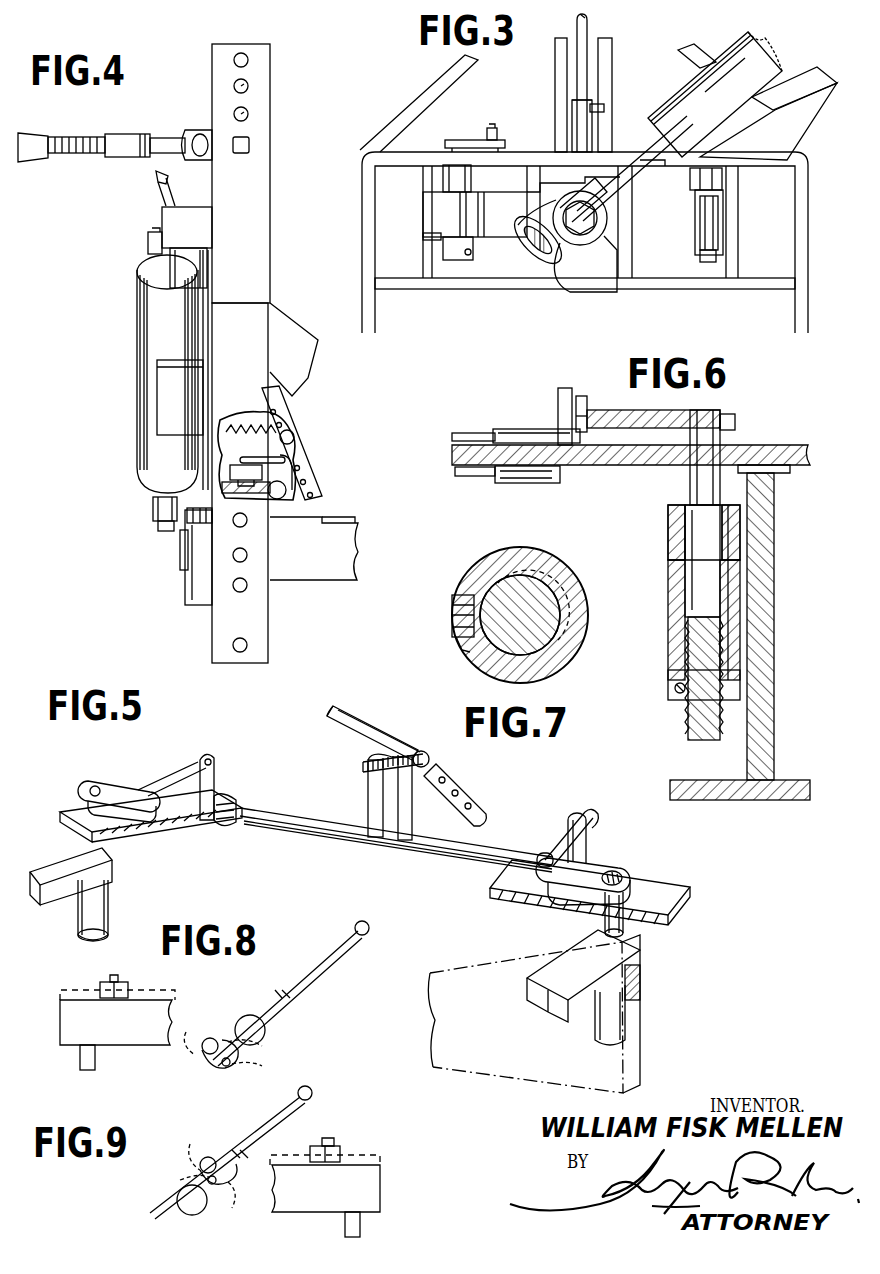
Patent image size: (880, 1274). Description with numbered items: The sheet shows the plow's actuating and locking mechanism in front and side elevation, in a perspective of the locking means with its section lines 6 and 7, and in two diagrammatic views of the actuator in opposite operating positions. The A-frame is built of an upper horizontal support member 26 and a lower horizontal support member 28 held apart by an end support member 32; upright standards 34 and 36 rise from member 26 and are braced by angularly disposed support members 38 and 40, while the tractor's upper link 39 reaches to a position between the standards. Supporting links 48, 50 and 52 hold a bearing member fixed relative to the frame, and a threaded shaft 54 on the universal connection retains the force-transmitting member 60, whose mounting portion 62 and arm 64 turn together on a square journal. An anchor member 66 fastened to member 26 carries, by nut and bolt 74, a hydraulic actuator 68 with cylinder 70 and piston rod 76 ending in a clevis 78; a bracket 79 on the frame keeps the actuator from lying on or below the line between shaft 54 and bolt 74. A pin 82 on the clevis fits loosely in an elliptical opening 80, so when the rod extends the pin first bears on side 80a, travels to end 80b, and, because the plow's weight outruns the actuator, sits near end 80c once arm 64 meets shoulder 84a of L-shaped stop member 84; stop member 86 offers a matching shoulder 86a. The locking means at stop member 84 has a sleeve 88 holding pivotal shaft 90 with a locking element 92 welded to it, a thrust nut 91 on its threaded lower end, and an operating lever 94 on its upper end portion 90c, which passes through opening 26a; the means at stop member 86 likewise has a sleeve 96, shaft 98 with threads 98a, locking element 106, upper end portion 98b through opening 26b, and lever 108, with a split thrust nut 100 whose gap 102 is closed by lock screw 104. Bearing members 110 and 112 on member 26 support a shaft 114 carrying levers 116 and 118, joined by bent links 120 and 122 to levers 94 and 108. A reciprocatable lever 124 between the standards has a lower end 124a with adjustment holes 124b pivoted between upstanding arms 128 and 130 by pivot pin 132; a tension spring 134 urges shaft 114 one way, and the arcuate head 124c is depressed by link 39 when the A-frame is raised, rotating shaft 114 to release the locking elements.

In FIG. 5, the section line 6— 6 is at (593, 929).
In FIG. 6, the section line 7— 7 is at (660, 700).
In FIG. 3, the horizontal support member 26 is at (655, 166).
In FIG. 6, the horizontal support member 26 is at (788, 448).
In FIG. 5, the horizontal support member 26 is at (182, 844).
In FIG. 5, the through opening 26a is at (100, 856).
In FIG. 6, the through opening 26b is at (728, 436).
In FIG. 3, the horizontal support member 28 is at (660, 288).
In FIG. 4, the end support member 32 is at (262, 607).
In FIG. 3, the end support member 32 is at (810, 241).
In FIG. 3, the standard 34 is at (556, 93).
In FIG. 4, the standard 36 is at (258, 214).
In FIG. 3, the standard 36 is at (614, 87).
In FIG. 3, the angularly disposed support member 38 is at (422, 98).
In FIG. 4, the upper link 39 is at (130, 108).
In FIG. 3, the angularly disposed support member 40 is at (700, 62).
In FIG. 4, the supporting link 48 is at (350, 575).
In FIG. 4, the supporting link 50 is at (304, 350).
In FIG. 4, the supporting link 52 is at (350, 524).
In FIG. 4, the shaft 54 is at (176, 546).
In FIG. 8, the shaft 54 is at (252, 1032).
In FIG. 9, the shaft 54 is at (194, 1212).
In FIG. 3, the force-transmitting member 60 is at (525, 208).
In FIG. 4, the mounting portion 62 is at (168, 527).
In FIG. 3, the mounting portion 62 is at (598, 288).
In FIG. 3, the arm 64 is at (432, 208).
In FIG. 5, the arm 64 is at (517, 1060).
In FIG. 8, the arm 64 is at (70, 990).
In FIG. 9, the arm 64 is at (362, 1156).
In FIG. 4, the anchor or support member 66 is at (162, 266).
In FIG. 3, the anchor or support member 66 is at (803, 128).
In FIG. 4, the hydraulic ram or actuator 68 is at (152, 378).
In FIG. 3, the hydraulic ram or actuator 68 is at (760, 52).
In FIG. 4, the cylinder 70 is at (148, 436).
In FIG. 4, the nut and bolt 74 is at (150, 242).
In FIG. 8, the nut and bolt 74 is at (366, 930).
In FIG. 9, the nut and bolt 74 is at (308, 1088).
In FIG. 3, the piston rod 76 is at (642, 156).
In FIG. 4, the clevis 78 is at (153, 506).
In FIG. 3, the clevis 78 is at (585, 248).
In FIG. 4, the bracket 79 is at (165, 414).
In FIG. 3, the bracket 79 is at (805, 84).
In FIG. 3, the elliptical through opening 80 is at (524, 230).
In FIG. 8, the elliptical through opening 80 is at (218, 1062).
In FIG. 9, the elliptical through opening 80 is at (222, 1176).
In FIG. 8, the side of opening 80a is at (240, 1046).
In FIG. 9, the side of opening 80a is at (198, 1176).
In FIG. 8, the end of opening 80b is at (242, 1064).
In FIG. 9, the end of opening 80b is at (204, 1160).
In FIG. 8, the end of opening 80c is at (202, 1040).
In FIG. 9, the end of opening 80c is at (222, 1192).
In FIG. 3, the pin 82 is at (530, 252).
In FIG. 8, the pin 82 is at (212, 1040).
In FIG. 9, the pin 82 is at (212, 1160).
In FIG. 3, the stop member 84 is at (428, 257).
In FIG. 3, the shoulder 84a is at (432, 236).
In FIG. 8, the shoulder 84a is at (58, 1048).
In FIG. 4, the stop member 86 is at (195, 592).
In FIG. 3, the stop member 86 is at (735, 216).
In FIG. 6, the stop member 86 is at (760, 626).
In FIG. 9, the stop member 86 is at (362, 1226).
In FIG. 3, the shoulder 86a is at (735, 240).
In FIG. 9, the shoulder 86a is at (345, 1220).
In FIG. 5, the tubular member or sleeve 88 is at (108, 906).
In FIG. 3, the pivotal shaft 90 is at (478, 140).
In FIG. 8, the pivotal shaft 90 is at (114, 978).
In FIG. 5, the upper end portion 90c is at (94, 788).
In FIG. 3, the adjustable lock nut or thrust member 91 is at (464, 250).
In FIG. 5, the adjustable lock nut or thrust member 91 is at (75, 932).
In FIG. 3, the locking element 92 is at (448, 180).
In FIG. 5, the locking element 92 is at (48, 872).
In FIG. 3, the operating lever 94 is at (480, 140).
In FIG. 5, the operating lever 94 is at (126, 794).
In FIG. 8, the operating lever 94 is at (126, 990).
In FIG. 3, the sleeve 96 is at (700, 228).
In FIG. 6, the sleeve 96 is at (727, 594).
In FIG. 5, the sleeve 96 is at (614, 1000).
In FIG. 4, the pivotal shaft 98 is at (280, 498).
In FIG. 6, the pivotal shaft 98 is at (713, 580).
In FIG. 7, the pivotal shaft 98 is at (545, 586).
In FIG. 5, the pivotal shaft 98 is at (620, 878).
In FIG. 9, the pivotal shaft 98 is at (332, 1142).
In FIG. 6, the fastening threads 98a is at (704, 740).
In FIG. 7, the fastening threads 98a is at (560, 610).
In FIG. 6, the upper end portion 98b is at (716, 404).
In FIG. 3, the adjustable lock nut or thrust nut 100 is at (702, 256).
In FIG. 6, the adjustable lock nut or thrust nut 100 is at (670, 690).
In FIG. 7, the adjustable lock nut or thrust nut 100 is at (519, 552).
In FIG. 7, the gap 102 is at (462, 608).
In FIG. 7, the lock screw 104 is at (463, 640).
In FIG. 4, the locking element 106 is at (206, 522).
In FIG. 3, the locking element 106 is at (724, 182).
In FIG. 6, the locking element 106 is at (730, 524).
In FIG. 5, the locking element 106 is at (572, 964).
In FIG. 9, the locking element 106 is at (312, 1150).
In FIG. 6, the operating lever 108 is at (606, 411).
In FIG. 5, the operating lever 108 is at (590, 875).
In FIG. 5, the sleeve or bearing member 110 is at (226, 800).
In FIG. 6, the sleeve or bearing member 112 is at (504, 432).
In FIG. 5, the sleeve or bearing member 112 is at (540, 856).
In FIG. 6, the shaft 114 is at (466, 436).
In FIG. 5, the shaft 114 is at (310, 812).
In FIG. 5, the operating lever 116 is at (216, 770).
In FIG. 4, the operating lever 118 is at (292, 480).
In FIG. 6, the operating lever 118 is at (559, 392).
In FIG. 5, the operating lever 118 is at (588, 850).
In FIG. 5, the connecting link 120 is at (182, 772).
In FIG. 4, the link 122 is at (258, 462).
In FIG. 6, the link 122 is at (582, 400).
In FIG. 5, the link 122 is at (560, 845).
In FIG. 4, the reciprocatable lever 124 is at (162, 194).
In FIG. 3, the reciprocatable lever 124 is at (589, 68).
In FIG. 4, the lower end 124a is at (300, 468).
In FIG. 5, the lower end 124a is at (392, 734).
In FIG. 5, the holes or through openings 124b is at (474, 800).
In FIG. 4, the head 124c is at (150, 178).
In FIG. 3, the upstanding arm 128 is at (574, 130).
In FIG. 5, the upstanding arm 128 is at (338, 856).
In FIG. 4, the upstanding arm 130 is at (295, 437).
In FIG. 3, the upstanding arm 130 is at (600, 116).
In FIG. 5, the upstanding arm 130 is at (392, 836).
In FIG. 5, the pivot pin or bolt 132 is at (430, 760).
In FIG. 4, the tension spring 134 is at (250, 420).
In FIG. 5, the tension spring 134 is at (358, 766).